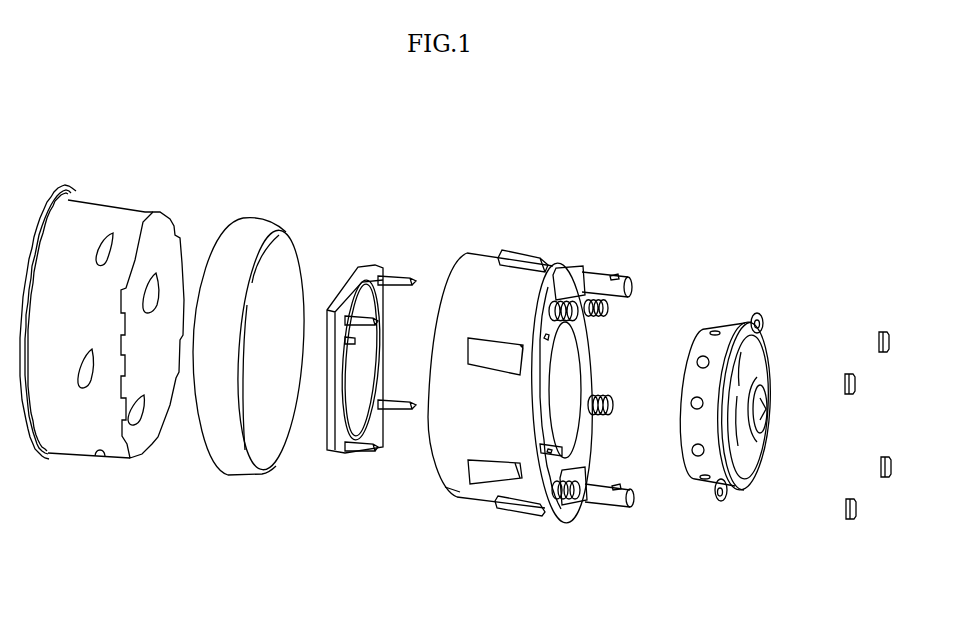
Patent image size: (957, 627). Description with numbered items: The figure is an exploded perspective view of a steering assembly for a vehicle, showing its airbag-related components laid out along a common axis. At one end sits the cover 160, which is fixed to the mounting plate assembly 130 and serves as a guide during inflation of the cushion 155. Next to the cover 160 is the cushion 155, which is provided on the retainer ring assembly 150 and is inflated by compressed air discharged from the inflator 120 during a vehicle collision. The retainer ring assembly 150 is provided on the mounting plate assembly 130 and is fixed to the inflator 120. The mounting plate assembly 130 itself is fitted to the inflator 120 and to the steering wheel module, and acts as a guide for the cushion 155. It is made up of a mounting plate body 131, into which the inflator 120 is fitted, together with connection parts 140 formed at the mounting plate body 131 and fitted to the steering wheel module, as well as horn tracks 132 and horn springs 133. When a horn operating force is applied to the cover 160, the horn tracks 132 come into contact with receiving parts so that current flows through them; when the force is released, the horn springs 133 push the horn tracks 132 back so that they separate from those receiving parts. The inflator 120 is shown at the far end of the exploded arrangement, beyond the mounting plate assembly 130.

The inflator 120 is at (692, 480).
The mounting plate assembly 130 is at (568, 380).
The mounting plate body 131 is at (462, 480).
The horn tracks 132 is at (540, 508).
The horn springs 133 is at (616, 398).
The connection parts 140 is at (597, 282).
The retainer ring assembly 150 is at (346, 453).
The cushion 155 is at (228, 464).
The cover 160 is at (52, 456).